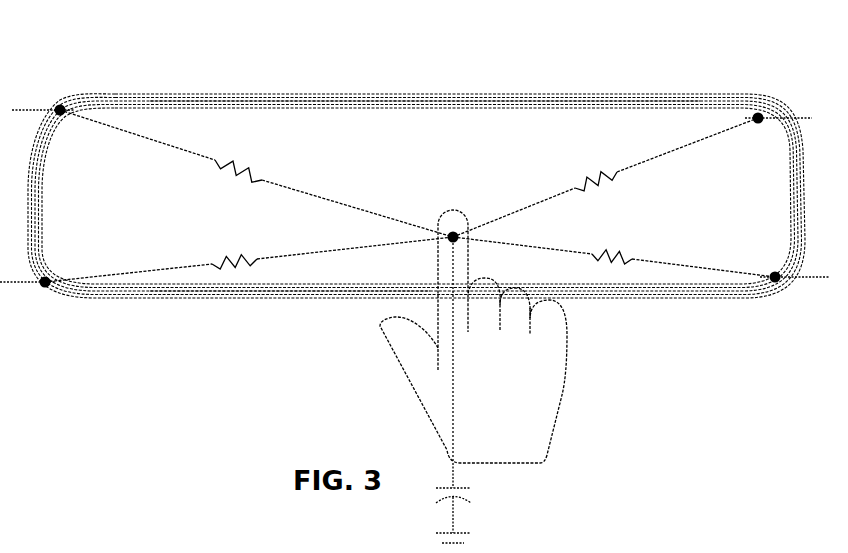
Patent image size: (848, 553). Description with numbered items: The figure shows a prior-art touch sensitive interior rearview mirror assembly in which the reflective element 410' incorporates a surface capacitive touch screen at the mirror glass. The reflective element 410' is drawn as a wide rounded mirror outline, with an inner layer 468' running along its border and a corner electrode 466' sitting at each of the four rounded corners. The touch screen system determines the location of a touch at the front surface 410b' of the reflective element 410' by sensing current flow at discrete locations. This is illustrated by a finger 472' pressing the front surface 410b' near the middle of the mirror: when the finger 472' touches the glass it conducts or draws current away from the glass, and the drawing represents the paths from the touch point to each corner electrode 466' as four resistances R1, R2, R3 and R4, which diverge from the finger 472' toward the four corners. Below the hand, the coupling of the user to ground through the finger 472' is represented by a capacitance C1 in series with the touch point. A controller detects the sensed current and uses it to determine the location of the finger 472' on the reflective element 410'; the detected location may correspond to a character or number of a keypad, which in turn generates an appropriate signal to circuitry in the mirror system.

The reflective element 410' is at (416, 166).
The front surface 410b' is at (290, 308).
The conductive coating layer 468' is at (425, 81).
The corner electrodes 466' is at (415, 198).
The finger 472' is at (473, 306).
The resistance to first corner electrode R1 is at (256, 173).
The resistance to second corner electrode R2 is at (249, 257).
The resistance to third corner electrode R3 is at (605, 177).
The resistance to fourth corner electrode R4 is at (614, 252).
The capacitance of user to ground C1 is at (469, 503).